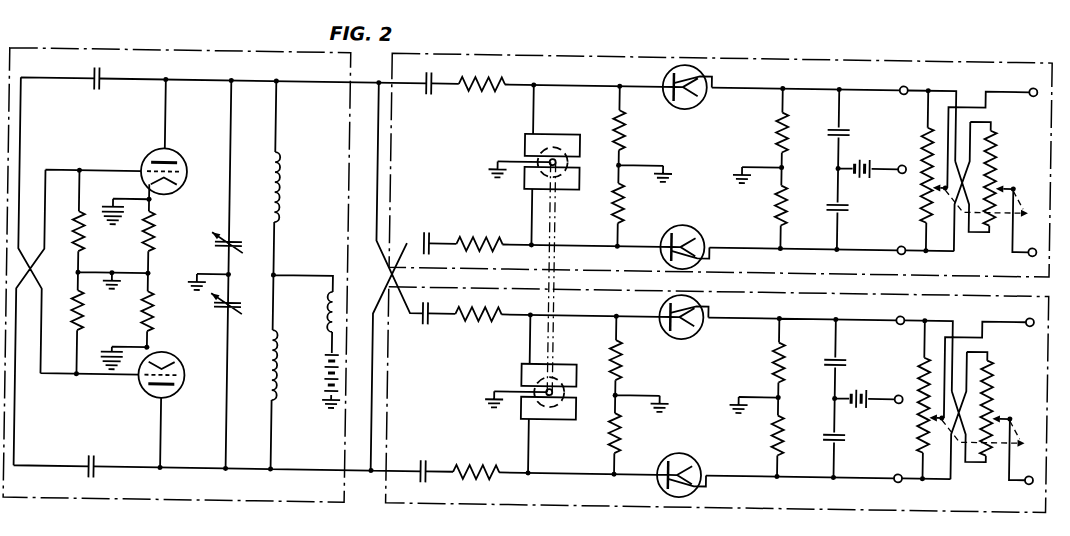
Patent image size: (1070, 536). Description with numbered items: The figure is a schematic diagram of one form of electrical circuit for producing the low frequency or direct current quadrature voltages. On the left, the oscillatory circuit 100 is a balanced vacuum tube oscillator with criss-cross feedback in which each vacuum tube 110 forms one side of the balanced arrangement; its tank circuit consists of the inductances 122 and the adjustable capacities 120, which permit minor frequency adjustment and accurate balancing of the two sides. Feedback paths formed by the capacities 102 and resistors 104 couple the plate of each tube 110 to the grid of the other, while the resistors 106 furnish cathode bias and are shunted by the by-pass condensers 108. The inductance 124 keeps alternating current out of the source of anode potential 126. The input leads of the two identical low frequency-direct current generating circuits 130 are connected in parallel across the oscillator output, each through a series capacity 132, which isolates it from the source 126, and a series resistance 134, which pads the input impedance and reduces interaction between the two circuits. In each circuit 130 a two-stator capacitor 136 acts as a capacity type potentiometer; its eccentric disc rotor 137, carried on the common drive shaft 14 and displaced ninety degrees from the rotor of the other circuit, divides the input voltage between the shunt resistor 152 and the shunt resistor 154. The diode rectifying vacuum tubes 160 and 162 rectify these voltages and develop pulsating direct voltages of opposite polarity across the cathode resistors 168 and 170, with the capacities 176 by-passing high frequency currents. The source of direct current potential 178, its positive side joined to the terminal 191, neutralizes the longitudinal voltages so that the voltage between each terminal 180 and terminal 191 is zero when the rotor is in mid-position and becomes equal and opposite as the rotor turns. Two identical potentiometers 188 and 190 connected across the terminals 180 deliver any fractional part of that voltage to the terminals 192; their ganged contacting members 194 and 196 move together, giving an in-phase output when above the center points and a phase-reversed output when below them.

The oscillatory circuit 100 is at (181, 47).
The capacities 102 is at (101, 66).
The resistors 104 is at (76, 212).
The resistors 106 is at (156, 223).
The by-pass condensers 108 is at (115, 203).
The vacuum tube 110 is at (184, 145).
The capacities 120 is at (219, 242).
The inductances 122 is at (288, 179).
The inductance 124 is at (326, 293).
The source of anode potential 126 is at (326, 382).
The low frequency-direct current generating circuit 130 is at (976, 48).
The series capacities 132 is at (433, 72).
The series resistances 134 is at (494, 66).
The two-stator capacitor 136 is at (525, 152).
The rotor 137 is at (555, 132).
The shaft 14 is at (551, 270).
The shunt resistor 152 is at (629, 119).
The shunt resistor 154 is at (630, 183).
The diode rectifying vacuum tube 160 is at (699, 68).
The diode rectifying vacuum tube 162 is at (708, 228).
The cathode resistor 168 is at (777, 126).
The cathode resistor 170 is at (778, 190).
The capacities 176 is at (847, 116).
The source of direct current potential 178 is at (865, 147).
The terminals 180 is at (904, 73).
The potentiometer 188 is at (924, 174).
The potentiometer 190 is at (1002, 138).
The terminal 191 is at (905, 151).
The terminals 192 is at (1035, 73).
The contacting member 194 is at (944, 178).
The contacting member 196 is at (1010, 171).